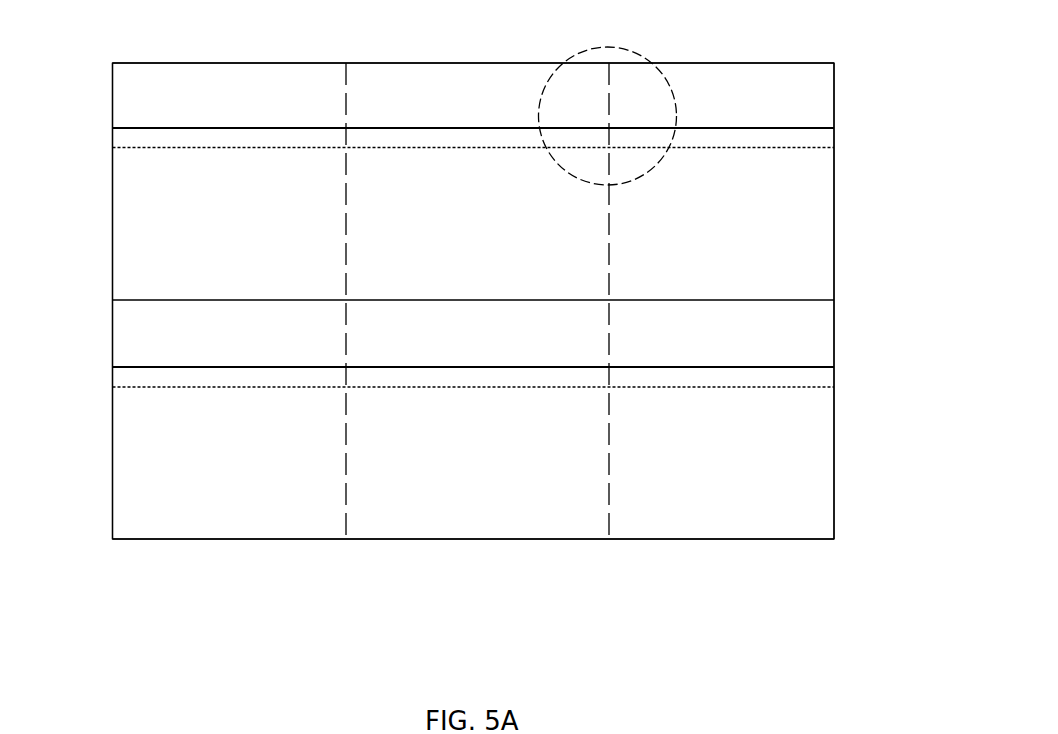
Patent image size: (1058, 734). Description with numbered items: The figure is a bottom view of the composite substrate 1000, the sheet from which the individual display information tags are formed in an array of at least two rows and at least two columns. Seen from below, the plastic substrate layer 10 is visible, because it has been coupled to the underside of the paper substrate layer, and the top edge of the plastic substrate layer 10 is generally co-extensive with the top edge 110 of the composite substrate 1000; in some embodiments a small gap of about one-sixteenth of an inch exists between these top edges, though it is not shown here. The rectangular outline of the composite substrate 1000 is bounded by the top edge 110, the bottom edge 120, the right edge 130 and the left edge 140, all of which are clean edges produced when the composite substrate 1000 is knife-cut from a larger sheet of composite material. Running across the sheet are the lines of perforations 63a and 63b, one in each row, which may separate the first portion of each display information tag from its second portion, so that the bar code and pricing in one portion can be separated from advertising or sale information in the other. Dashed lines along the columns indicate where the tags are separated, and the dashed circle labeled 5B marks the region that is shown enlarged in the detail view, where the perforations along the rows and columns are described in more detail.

The plastic substrate layer 10 is at (823, 107).
The line of perforations 63a is at (800, 148).
The line of perforations 63b is at (800, 387).
The top edge 110 is at (448, 62).
The bottom edge 120 is at (530, 540).
The right edge 130 is at (113, 222).
The left edge 140 is at (834, 228).
The composite substrate 1000 is at (795, 550).
The detail view region 5B is at (648, 60).